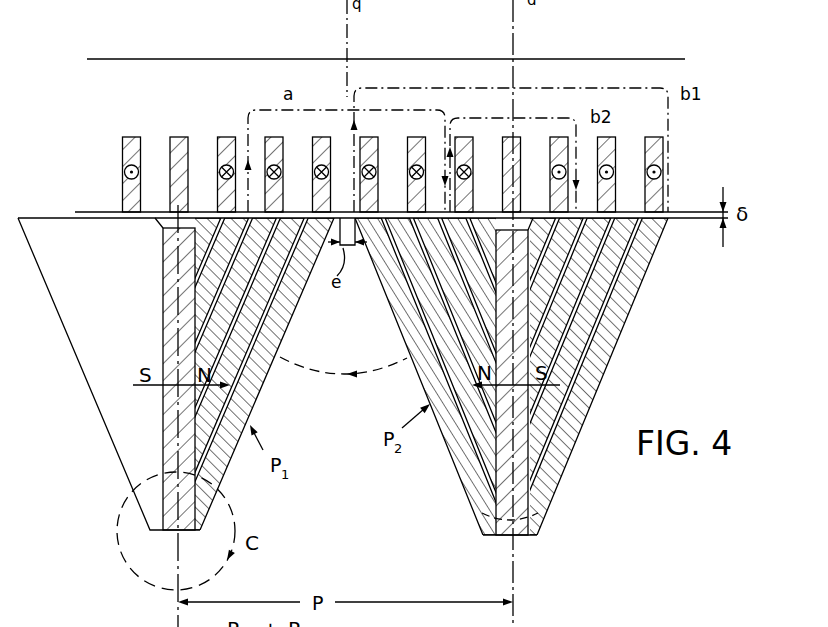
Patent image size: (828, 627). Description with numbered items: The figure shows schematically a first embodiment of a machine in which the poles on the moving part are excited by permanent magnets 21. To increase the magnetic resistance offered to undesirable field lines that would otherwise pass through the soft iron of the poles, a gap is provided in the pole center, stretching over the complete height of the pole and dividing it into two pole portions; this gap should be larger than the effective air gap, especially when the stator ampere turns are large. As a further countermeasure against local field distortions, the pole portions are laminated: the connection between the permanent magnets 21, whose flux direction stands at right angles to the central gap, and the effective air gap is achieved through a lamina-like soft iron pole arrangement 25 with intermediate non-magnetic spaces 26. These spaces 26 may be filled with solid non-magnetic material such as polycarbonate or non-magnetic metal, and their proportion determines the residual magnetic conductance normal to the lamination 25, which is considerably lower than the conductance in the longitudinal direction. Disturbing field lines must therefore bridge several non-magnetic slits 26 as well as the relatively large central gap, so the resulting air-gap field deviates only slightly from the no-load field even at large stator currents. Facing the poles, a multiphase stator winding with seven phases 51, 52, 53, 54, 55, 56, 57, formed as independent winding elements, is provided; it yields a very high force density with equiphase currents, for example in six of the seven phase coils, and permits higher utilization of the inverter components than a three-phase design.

The phase winding element 51 is at (179, 137).
The phase winding element 52 is at (227, 137).
The phase winding element 53 is at (275, 137).
The phase winding element 54 is at (321, 137).
The phase winding element 55 is at (368, 137).
The phase winding element 56 is at (417, 137).
The phase winding element 57 is at (463, 137).
The lamina-like soft iron pole arrangement 25 is at (468, 277).
The non-magnetic spaces 26 is at (603, 313).
The permanent magnets 21 is at (548, 472).